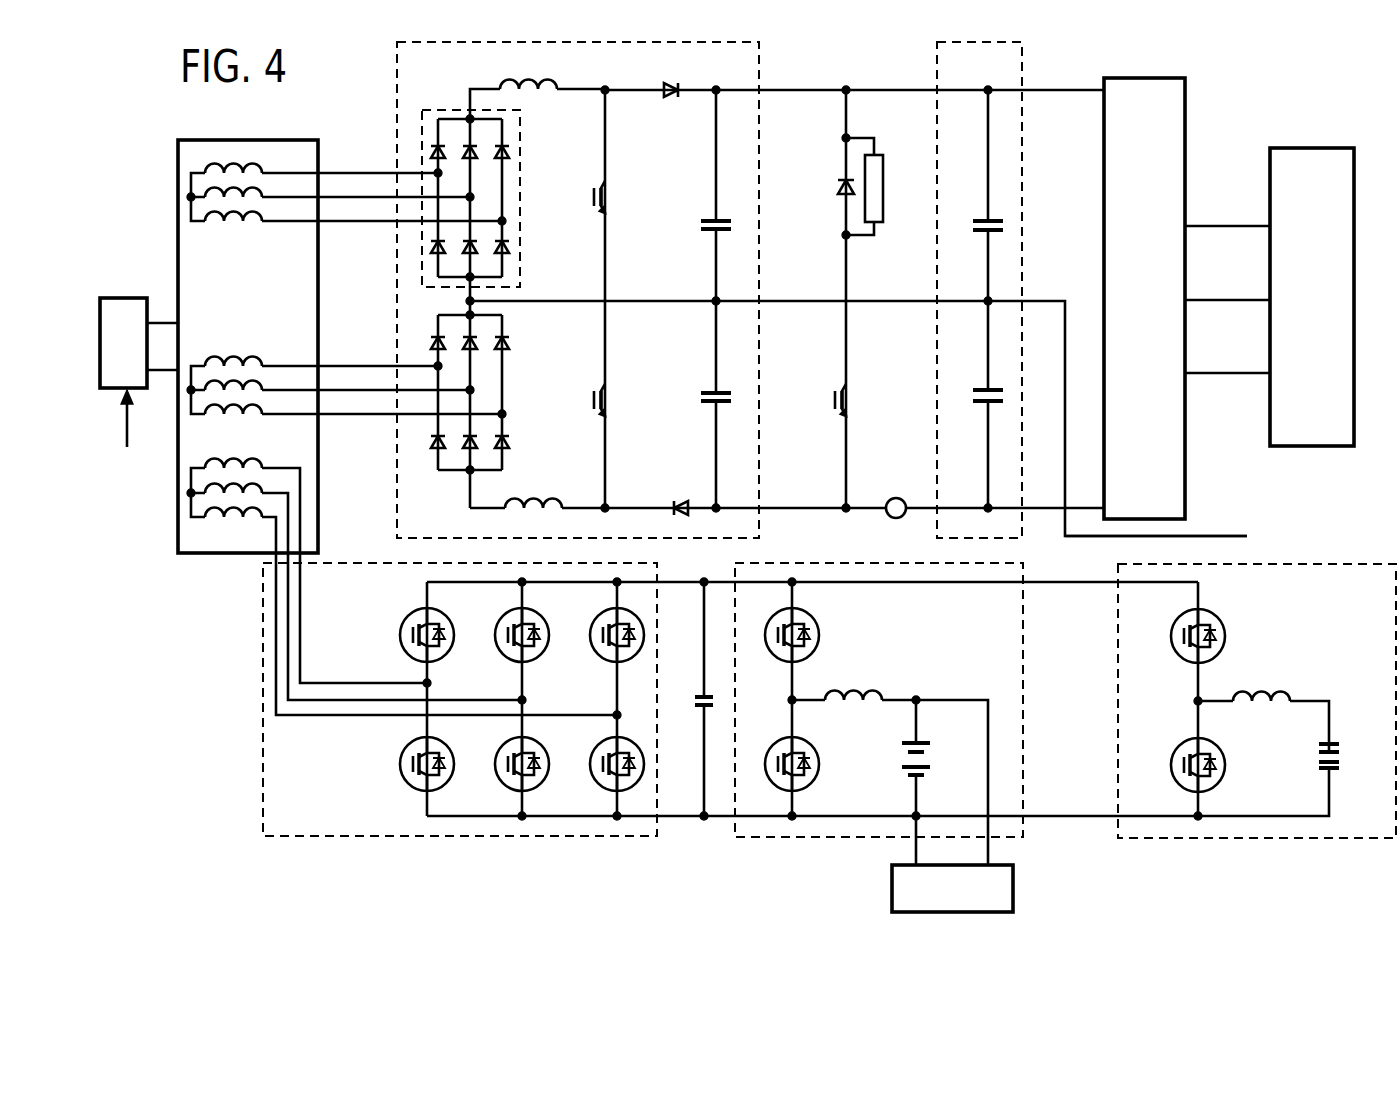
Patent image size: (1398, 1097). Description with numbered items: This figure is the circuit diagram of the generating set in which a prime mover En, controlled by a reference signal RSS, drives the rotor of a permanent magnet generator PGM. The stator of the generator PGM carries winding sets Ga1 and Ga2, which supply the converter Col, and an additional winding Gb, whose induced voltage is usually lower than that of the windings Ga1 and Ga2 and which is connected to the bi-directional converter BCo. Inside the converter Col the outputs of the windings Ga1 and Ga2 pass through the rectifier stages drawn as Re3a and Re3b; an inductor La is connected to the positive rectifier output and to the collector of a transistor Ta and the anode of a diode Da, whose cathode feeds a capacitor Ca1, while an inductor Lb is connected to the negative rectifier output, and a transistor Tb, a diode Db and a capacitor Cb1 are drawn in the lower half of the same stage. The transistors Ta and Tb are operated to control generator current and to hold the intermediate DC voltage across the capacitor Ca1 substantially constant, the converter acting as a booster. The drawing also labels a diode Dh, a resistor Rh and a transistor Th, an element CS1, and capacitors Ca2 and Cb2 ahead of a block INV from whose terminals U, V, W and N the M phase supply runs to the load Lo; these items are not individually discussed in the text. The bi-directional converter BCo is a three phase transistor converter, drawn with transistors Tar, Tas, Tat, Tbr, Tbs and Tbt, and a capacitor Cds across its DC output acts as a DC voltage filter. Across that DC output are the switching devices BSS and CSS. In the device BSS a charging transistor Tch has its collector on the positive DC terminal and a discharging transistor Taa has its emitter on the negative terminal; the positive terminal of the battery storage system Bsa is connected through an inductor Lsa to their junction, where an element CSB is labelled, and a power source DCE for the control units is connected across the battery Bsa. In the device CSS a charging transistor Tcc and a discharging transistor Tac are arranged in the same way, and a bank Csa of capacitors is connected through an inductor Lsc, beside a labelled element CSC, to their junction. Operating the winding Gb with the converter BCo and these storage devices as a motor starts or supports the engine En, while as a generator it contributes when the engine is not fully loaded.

The permanent magnet generator PGM is at (248, 330).
The prime mover En is at (139, 326).
The reference signal RSS is at (129, 435).
The stator winding set Ga1 is at (344, 208).
The stator winding set Ga2 is at (344, 402).
The additional winding Gb is at (402, 587).
The converter Col is at (554, 290).
The three-phase rectifier a Re3a is at (465, 197).
The three-phase rectifier b Re3b is at (459, 410).
The inductor La is at (537, 85).
The inductor Lb is at (537, 486).
The diode Da is at (676, 74).
The diode b Db is at (681, 489).
The transistor Ta is at (583, 299).
The transistor Tb is at (583, 401).
The capacitor Ca1 is at (693, 195).
The capacitor b1 Cb1 is at (693, 404).
The diode h Dh is at (827, 299).
The resistor h Rh is at (884, 186).
The transistor h Th is at (822, 401).
The current sensor CS1 is at (900, 491).
The capacitor a2 Ca2 is at (979, 290).
The capacitor b2 Cb2 is at (974, 404).
The inverter INV is at (1144, 281).
The load Lo is at (1312, 280).
The phase U output U is at (1227, 212).
The phase V output V is at (1227, 286).
The phase W output W is at (1227, 360).
The neutral output N is at (1167, 538).
The bi-directional converter BCo is at (730, 719).
The transistor ar Tar is at (418, 697).
The transistor as Tas is at (510, 699).
The transistor at Tat is at (605, 699).
The transistor br Tbr is at (413, 753).
The transistor bs Tbs is at (505, 753).
The transistor bt Tbt is at (601, 753).
The capacitor Cds is at (685, 699).
The switching device BSS is at (879, 720).
The charging transistor Tch is at (779, 699).
The discharging transistor Taa is at (779, 753).
The inductor Lsa is at (890, 759).
The battery current sensor CSB is at (853, 725).
The battery storage system Bsa is at (941, 782).
The power source DCE is at (984, 888).
The switching device CSS is at (1257, 720).
The charging transistor Tcc is at (1183, 701).
The discharging transistor Tac is at (1182, 754).
The inductor Lsc is at (1263, 698).
The capacitor current sensor CSC is at (1260, 725).
The bank of capacitors Csa is at (1294, 779).